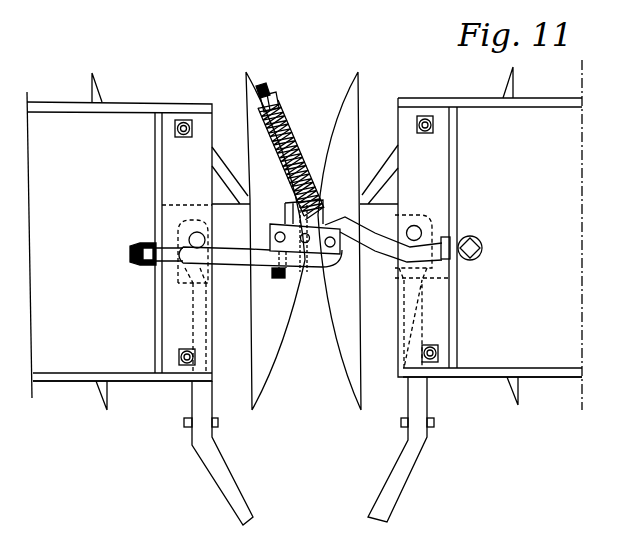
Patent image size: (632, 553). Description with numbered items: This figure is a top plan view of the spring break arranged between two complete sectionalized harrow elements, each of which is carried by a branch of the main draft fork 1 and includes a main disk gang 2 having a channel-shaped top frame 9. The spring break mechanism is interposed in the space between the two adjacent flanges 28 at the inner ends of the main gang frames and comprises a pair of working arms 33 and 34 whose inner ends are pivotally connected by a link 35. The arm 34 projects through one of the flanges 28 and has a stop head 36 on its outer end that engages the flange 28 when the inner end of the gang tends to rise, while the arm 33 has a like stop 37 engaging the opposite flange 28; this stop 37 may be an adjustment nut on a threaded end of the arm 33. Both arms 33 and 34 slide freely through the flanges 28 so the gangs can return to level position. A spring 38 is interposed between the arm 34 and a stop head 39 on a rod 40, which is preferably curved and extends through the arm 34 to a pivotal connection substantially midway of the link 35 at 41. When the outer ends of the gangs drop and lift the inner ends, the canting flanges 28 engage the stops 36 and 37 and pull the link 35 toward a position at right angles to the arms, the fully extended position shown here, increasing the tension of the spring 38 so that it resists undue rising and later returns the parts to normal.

The main draft fork 1 is at (373, 507).
The main disk gang 2 is at (307, 391).
The top frame 9 is at (68, 344).
The flange 28 is at (162, 310).
The working arm 33 is at (260, 269).
The working arm 34 is at (375, 240).
The link 35 is at (316, 255).
The stop head 36 is at (482, 247).
The stop 37 is at (141, 267).
The spring 38 is at (293, 153).
The stop head 39 is at (278, 97).
The rod 40 is at (261, 84).
The pivotal connection 41 is at (302, 236).